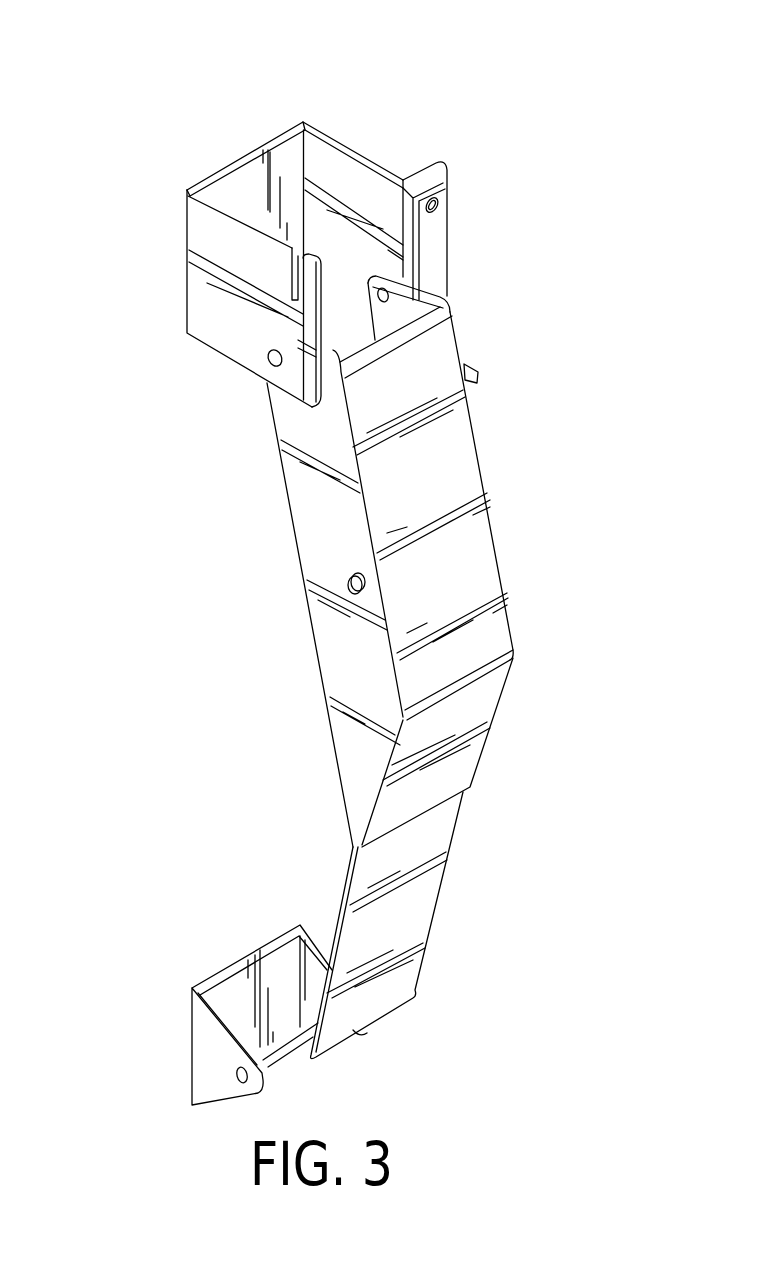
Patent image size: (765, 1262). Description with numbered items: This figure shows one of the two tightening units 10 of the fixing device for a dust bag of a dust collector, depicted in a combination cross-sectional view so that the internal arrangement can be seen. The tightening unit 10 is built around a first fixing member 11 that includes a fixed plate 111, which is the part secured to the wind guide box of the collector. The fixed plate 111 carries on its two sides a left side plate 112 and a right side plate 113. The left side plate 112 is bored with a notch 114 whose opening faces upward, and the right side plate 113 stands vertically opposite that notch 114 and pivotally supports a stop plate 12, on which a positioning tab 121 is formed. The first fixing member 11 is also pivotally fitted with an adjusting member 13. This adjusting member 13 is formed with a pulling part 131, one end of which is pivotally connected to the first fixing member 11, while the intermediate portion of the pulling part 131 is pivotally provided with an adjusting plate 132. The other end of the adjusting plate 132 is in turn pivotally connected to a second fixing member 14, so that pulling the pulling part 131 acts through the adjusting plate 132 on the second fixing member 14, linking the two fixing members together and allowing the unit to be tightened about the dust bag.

The tightening unit 10 is at (334, 552).
The first fixing member 11 is at (302, 205).
The fixed plate 111 is at (240, 188).
The left side plate 112 is at (179, 298).
The right side plate 113 is at (355, 178).
The notch 114 is at (298, 283).
The stop plate 12 is at (433, 240).
The positioning tab 121 is at (465, 366).
The adjusting member 13 is at (382, 667).
The pulling part 131 is at (481, 493).
The adjusting plate 132 is at (440, 890).
The second fixing member 14 is at (230, 987).